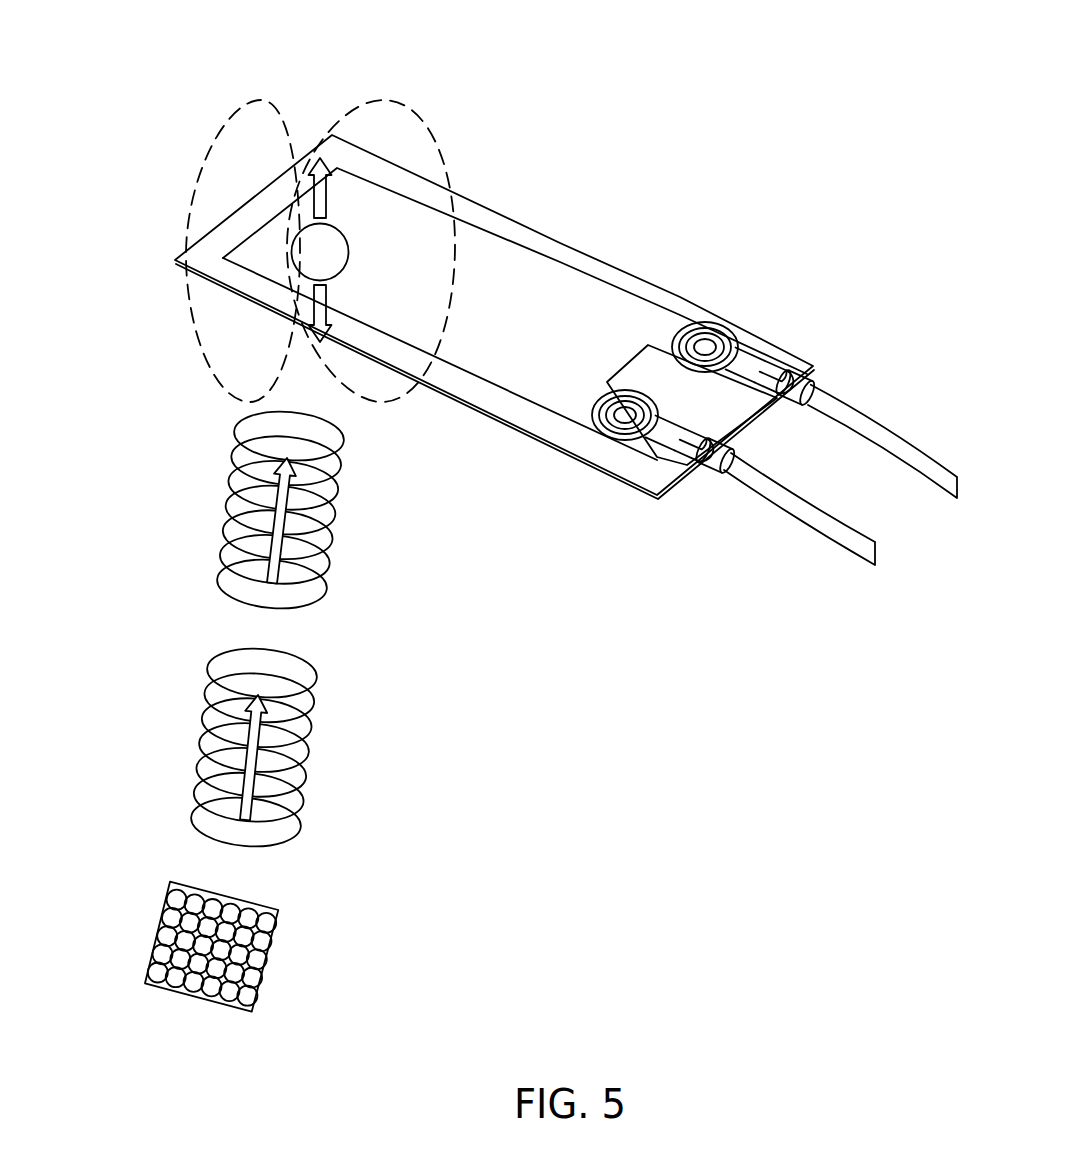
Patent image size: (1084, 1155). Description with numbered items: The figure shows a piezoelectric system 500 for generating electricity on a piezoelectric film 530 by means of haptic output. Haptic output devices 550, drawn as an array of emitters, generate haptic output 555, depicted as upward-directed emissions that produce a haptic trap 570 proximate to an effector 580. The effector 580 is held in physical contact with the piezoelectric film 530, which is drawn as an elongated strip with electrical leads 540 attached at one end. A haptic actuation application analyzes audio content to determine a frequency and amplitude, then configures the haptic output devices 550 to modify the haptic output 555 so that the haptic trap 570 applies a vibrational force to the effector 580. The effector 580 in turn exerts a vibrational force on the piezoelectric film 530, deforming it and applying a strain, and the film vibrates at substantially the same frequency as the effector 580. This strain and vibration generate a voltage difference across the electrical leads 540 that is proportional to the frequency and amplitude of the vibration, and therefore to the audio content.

The piezoelectric system 500 is at (737, 75).
The piezoelectric film 530 is at (553, 258).
The electrical leads 540 is at (880, 447).
The haptic output devices 550 is at (272, 933).
The haptic output 555 is at (327, 552).
The haptic trap 570 is at (260, 100).
The effector 580 is at (297, 233).